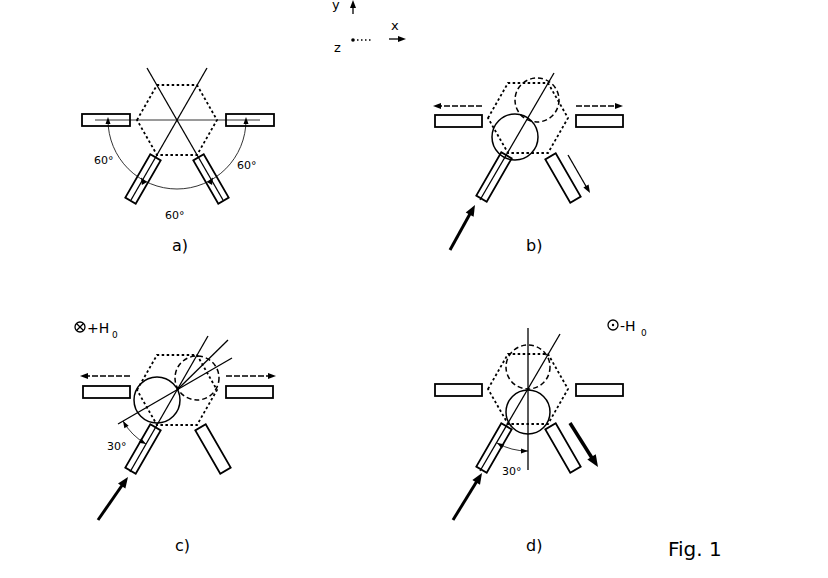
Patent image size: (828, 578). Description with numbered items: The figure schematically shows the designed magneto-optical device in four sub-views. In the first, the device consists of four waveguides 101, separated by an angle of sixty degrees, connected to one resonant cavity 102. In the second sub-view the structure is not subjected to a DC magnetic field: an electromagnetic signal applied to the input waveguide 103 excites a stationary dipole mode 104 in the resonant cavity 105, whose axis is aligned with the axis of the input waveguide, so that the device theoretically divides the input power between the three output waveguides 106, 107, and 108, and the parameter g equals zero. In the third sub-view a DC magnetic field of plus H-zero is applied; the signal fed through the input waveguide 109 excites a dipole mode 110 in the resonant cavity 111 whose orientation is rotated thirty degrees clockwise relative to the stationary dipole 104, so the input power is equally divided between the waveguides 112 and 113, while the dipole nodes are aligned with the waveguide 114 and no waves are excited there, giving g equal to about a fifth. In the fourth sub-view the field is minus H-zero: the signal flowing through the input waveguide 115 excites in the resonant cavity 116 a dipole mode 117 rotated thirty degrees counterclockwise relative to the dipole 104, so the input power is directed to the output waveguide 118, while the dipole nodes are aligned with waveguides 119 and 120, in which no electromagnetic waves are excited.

The waveguides 101 is at (253, 110).
The resonant cavity 102 is at (143, 97).
The input waveguide 103 is at (480, 175).
The stationary dipole mode 104 is at (557, 78).
The resonant cavity 105 is at (502, 77).
The output waveguide 106 is at (459, 130).
The output waveguide 107 is at (607, 130).
The output waveguide 108 is at (555, 185).
The input port 109 is at (150, 463).
The dipole mode 110 is at (217, 357).
The resonant cavity 111 is at (168, 345).
The waveguide 112 is at (102, 400).
The waveguide 113 is at (262, 402).
The waveguide 114 is at (235, 457).
The input waveguide 115 is at (478, 453).
The resonant cavity 116 is at (497, 368).
The dipole mode 117 is at (543, 340).
The output waveguide 118 is at (558, 462).
The waveguide 119 is at (453, 375).
The waveguide 120 is at (610, 400).